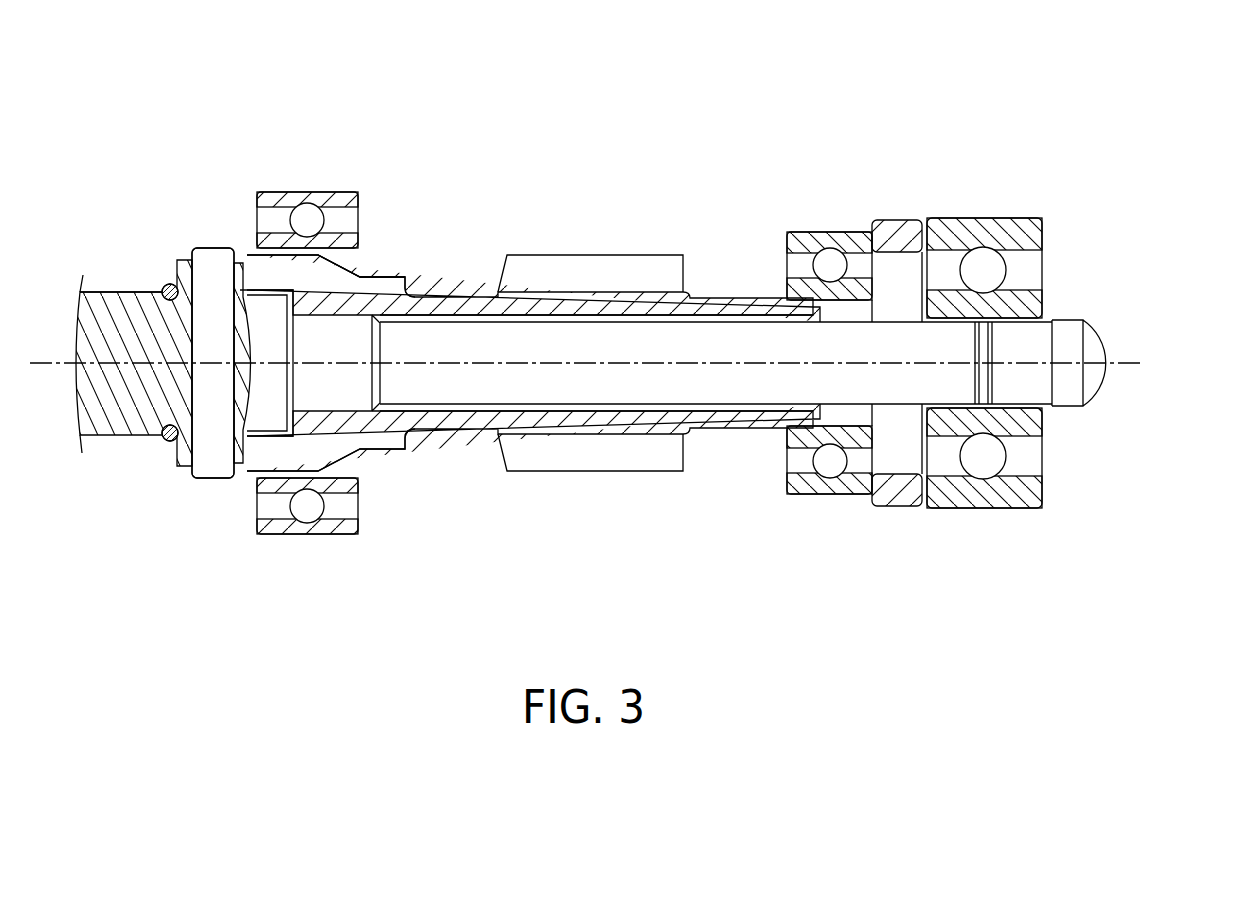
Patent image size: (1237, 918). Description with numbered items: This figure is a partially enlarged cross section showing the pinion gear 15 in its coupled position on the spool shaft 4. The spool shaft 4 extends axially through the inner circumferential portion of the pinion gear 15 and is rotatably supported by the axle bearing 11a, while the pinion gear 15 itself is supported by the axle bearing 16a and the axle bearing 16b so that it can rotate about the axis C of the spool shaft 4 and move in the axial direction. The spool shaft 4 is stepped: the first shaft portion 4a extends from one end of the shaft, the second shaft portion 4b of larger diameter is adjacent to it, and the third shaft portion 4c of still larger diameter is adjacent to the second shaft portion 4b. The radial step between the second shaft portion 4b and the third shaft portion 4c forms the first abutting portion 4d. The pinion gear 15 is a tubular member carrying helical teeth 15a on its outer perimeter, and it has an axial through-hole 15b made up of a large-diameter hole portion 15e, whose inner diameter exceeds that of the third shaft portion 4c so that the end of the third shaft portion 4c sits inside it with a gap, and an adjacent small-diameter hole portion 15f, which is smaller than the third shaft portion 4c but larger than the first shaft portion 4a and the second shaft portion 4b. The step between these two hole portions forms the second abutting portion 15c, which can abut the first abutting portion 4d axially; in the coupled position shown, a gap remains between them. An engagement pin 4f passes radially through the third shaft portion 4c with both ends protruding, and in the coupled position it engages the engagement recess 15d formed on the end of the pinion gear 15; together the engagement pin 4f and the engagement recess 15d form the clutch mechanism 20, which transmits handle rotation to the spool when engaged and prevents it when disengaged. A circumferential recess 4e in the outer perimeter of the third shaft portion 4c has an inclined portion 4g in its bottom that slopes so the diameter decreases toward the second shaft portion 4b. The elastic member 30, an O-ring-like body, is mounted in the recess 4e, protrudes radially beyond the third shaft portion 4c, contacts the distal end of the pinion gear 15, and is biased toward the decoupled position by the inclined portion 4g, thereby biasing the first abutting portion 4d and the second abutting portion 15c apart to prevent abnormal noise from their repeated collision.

The spool shaft 4 is at (590, 305).
The first shaft portion 4a is at (557, 345).
The second shaft portion 4b is at (353, 378).
The third shaft portion 4c is at (118, 305).
The first abutting portion 4d is at (330, 297).
The recess 4e is at (157, 283).
The engagement pin 4f is at (203, 258).
The inclined portion 4g is at (113, 290).
The axle bearing 11a is at (983, 460).
The pinion gear 15 is at (478, 297).
The helical teeth 15a is at (618, 277).
The through-hole 15b is at (873, 322).
The second abutting portion 15c is at (273, 291).
The engagement recess 15d is at (228, 252).
The large-diameter hole portion 15e is at (247, 292).
The small-diameter hole portion 15f is at (712, 330).
The axle bearing 16a is at (830, 465).
The axle bearing 16b is at (307, 512).
The clutch mechanism 20 is at (258, 78).
The elastic member 30 is at (166, 441).
The axis C is at (1133, 360).